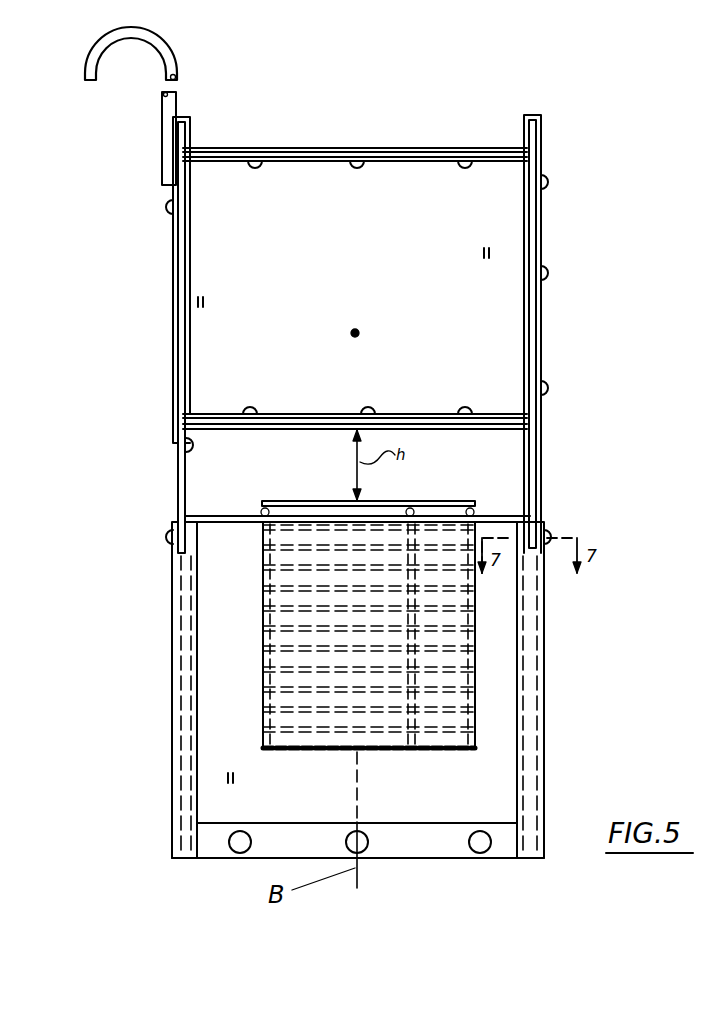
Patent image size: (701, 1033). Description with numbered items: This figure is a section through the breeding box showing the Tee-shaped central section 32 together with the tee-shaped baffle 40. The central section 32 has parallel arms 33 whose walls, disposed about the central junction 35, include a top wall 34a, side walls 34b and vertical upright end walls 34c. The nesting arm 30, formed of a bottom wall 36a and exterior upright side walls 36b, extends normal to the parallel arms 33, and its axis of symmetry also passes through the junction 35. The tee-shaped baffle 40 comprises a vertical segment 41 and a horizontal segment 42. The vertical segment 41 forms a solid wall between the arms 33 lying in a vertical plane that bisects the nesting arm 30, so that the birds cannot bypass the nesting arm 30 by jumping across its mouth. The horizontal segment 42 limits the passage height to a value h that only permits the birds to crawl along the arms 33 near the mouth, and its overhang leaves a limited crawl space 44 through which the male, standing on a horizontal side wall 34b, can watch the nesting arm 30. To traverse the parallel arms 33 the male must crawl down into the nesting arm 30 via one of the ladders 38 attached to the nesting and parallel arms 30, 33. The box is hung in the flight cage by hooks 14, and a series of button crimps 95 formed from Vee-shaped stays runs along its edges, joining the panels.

The hooks 14 is at (148, 48).
The nesting arm 30 is at (381, 705).
The Tee-shaped central section 32 is at (391, 663).
The parallel arms 33 is at (351, 328).
The top wall 34a is at (330, 148).
The side walls 34b is at (175, 220).
The end walls 34c is at (200, 302).
The central junction 35 is at (356, 330).
The bottom wall 36a is at (470, 823).
The side walls 36b is at (228, 778).
The ladders 38 is at (455, 500).
The tee-shaped baffle 40 is at (500, 412).
The vertical segment 41 is at (490, 252).
The horizontal segment 42 is at (408, 413).
The crawl space 44 is at (232, 472).
The button crimps 95 is at (487, 848).